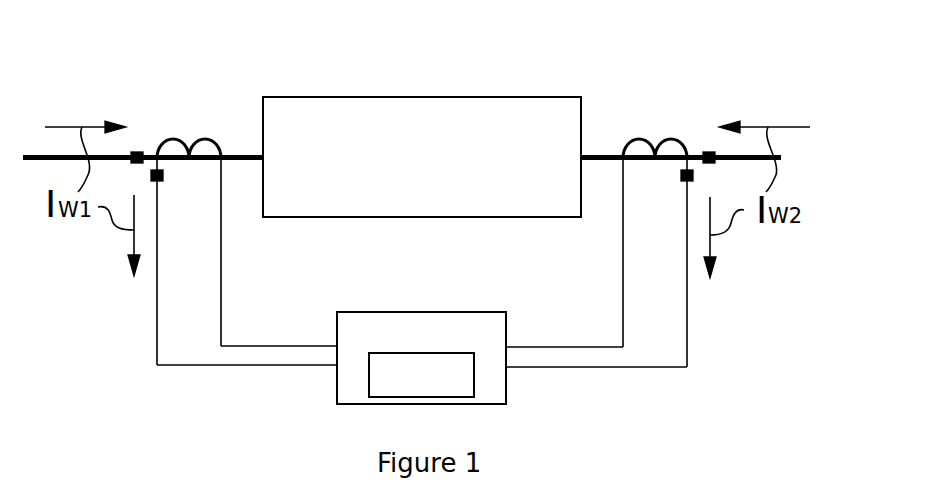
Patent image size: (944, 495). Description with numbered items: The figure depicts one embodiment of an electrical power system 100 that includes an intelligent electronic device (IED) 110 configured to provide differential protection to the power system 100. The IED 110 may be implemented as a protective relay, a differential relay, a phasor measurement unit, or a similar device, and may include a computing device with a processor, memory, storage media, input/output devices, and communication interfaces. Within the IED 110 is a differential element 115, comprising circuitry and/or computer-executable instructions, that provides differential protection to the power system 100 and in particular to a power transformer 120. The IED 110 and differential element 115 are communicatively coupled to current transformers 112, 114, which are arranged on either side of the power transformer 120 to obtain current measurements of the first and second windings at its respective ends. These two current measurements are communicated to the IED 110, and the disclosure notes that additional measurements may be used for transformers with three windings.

The electrical power system 100 is at (152, 42).
The intelligent electronic device 110 is at (421, 358).
The current transformer 112 is at (193, 114).
The current transformer 114 is at (661, 115).
The differential element 115 is at (443, 389).
The power transformer 120 is at (443, 185).